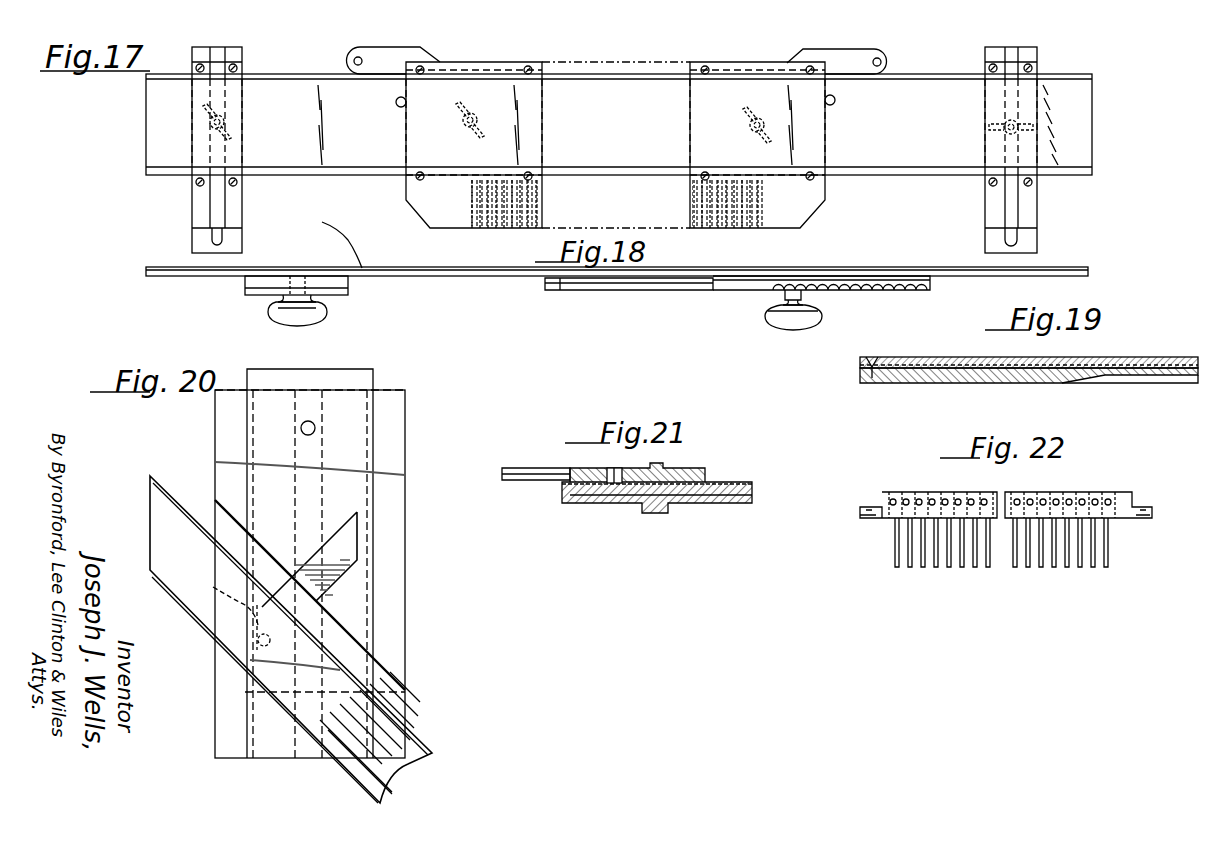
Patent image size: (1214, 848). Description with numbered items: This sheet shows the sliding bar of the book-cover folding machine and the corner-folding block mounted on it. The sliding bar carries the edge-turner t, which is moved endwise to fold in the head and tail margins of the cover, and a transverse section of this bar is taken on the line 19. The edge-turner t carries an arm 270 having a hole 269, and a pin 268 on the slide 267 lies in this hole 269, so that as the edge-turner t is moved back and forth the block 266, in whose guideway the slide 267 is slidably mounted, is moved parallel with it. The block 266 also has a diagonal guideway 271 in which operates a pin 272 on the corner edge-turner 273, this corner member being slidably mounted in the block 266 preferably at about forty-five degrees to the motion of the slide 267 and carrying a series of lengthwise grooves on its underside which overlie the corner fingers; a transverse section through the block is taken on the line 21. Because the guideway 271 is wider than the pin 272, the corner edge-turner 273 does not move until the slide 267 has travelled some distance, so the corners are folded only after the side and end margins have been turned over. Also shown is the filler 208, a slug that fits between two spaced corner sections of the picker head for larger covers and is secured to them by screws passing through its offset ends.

In FIG. 20, the block 266 is at (390, 410).
In FIG. 21, the block 266 is at (735, 490).
In FIG. 20, the slide 267 is at (345, 445).
In FIG. 21, the slide 267 is at (690, 490).
In FIG. 20, the pin 268 is at (312, 420).
In FIG. 17, the hole 269 is at (354, 62).
In FIG. 17, the arm 270 is at (385, 63).
In FIG. 20, the diagonal guideway 271 is at (345, 536).
In FIG. 20, the pin 272 is at (252, 614).
In FIG. 21, the pin 272 is at (612, 485).
In FIG. 20, the corner edge-turner 273 is at (330, 683).
In FIG. 21, the corner edge-turner 273 is at (580, 470).
In FIG. 22, the filler 208 is at (1045, 490).
In FIG. 17, the edge-turner t is at (408, 210).
In FIG. 18, the edge-turner t is at (730, 288).
In FIG. 19, the edge-turner t is at (946, 380).
In FIG. 18, the section line 19 is at (868, 255).
In FIG. 20, the section line 21 is at (190, 638).